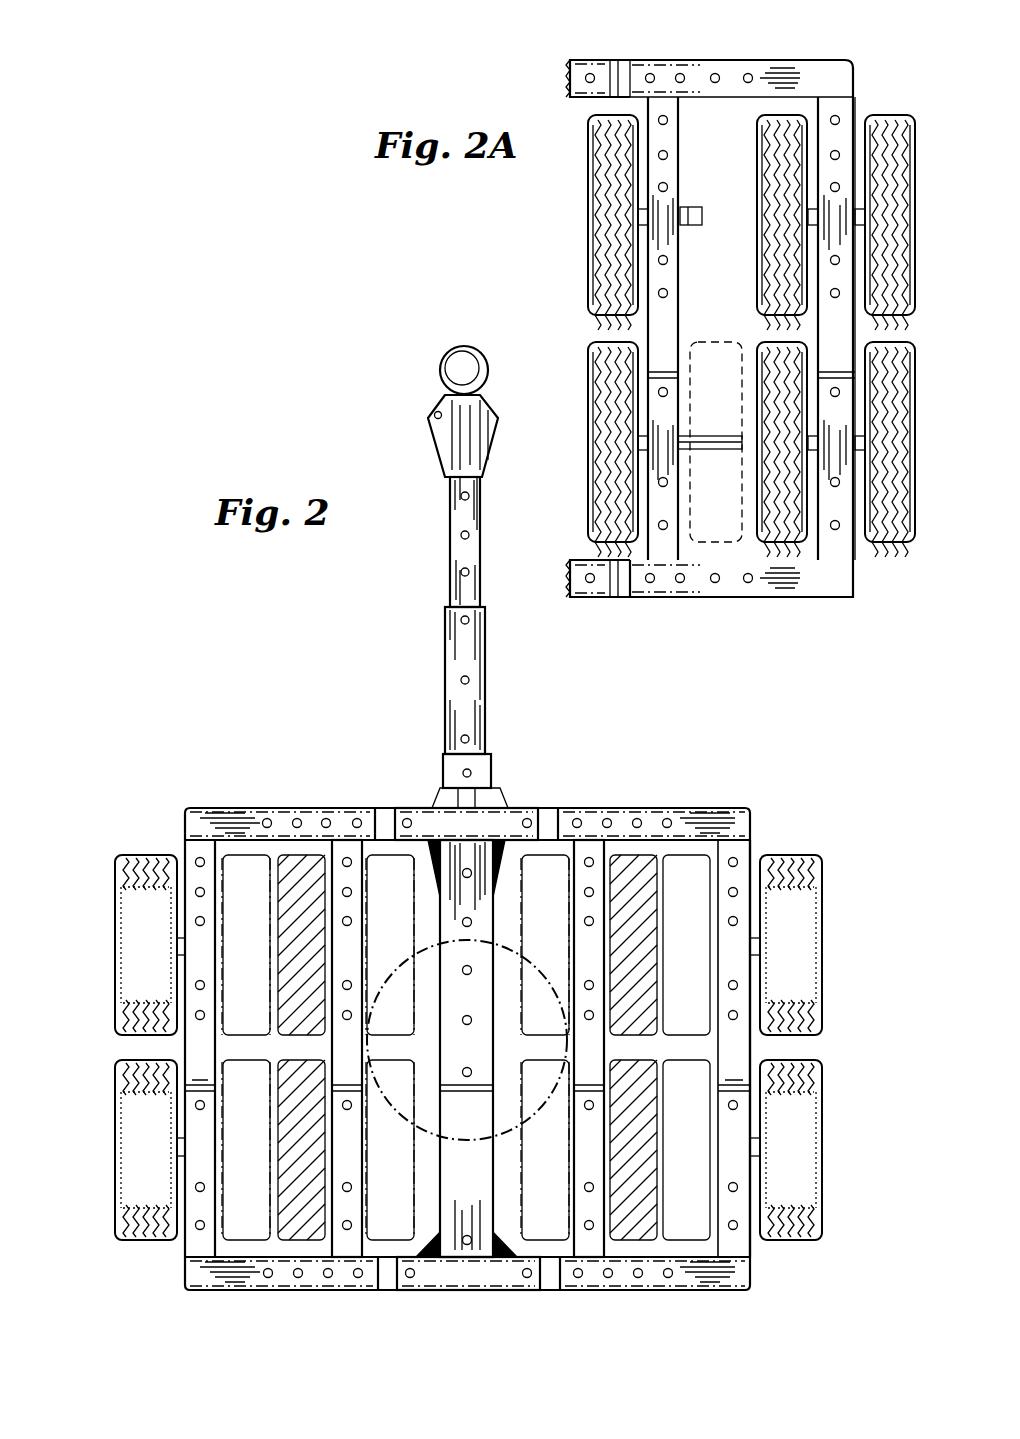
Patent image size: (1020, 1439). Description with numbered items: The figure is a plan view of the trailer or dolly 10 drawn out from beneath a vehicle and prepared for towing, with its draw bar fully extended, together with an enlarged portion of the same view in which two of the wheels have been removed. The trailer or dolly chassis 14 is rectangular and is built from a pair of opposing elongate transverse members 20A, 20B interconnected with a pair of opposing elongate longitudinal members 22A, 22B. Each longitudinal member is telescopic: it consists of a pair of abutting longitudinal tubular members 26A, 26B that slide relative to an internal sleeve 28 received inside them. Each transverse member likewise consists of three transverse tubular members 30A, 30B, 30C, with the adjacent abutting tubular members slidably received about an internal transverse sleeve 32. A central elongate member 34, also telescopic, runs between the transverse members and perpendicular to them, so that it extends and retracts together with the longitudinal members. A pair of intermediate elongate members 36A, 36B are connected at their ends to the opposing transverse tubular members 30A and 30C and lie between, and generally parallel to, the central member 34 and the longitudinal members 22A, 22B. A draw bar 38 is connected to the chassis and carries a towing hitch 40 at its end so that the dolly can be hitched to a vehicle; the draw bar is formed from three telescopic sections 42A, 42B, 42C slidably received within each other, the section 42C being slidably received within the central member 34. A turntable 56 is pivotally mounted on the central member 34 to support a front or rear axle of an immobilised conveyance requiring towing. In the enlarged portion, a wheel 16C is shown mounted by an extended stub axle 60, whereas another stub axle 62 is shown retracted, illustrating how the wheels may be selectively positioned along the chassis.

In FIG. 2, the trailer or dolly 10 is at (258, 668).
In FIG. 2A, the trailer or dolly chassis 14 is at (740, 50).
In FIG. 2, the trailer or dolly chassis 14 is at (735, 793).
In FIG. 2A, the wheel 16C is at (713, 537).
In FIG. 2, the transverse member 20A is at (330, 805).
In FIG. 2, the transverse member 20B is at (597, 1310).
In FIG. 2, the longitudinal member 22A is at (183, 1047).
In FIG. 2A, the longitudinal member 22B is at (862, 100).
In FIG. 2, the longitudinal member 22B is at (759, 1047).
In FIG. 2, the longitudinal tubular member 26A is at (197, 903).
In FIG. 2, the longitudinal tubular member 26B is at (197, 1172).
In FIG. 2, the internal sleeve 28 is at (197, 1103).
In FIG. 2, the transverse tubular member 30A is at (288, 822).
In FIG. 2, the transverse tubular member 30B is at (548, 815).
In FIG. 2, the transverse tubular member 30C is at (650, 832).
In FIG. 2, the internal transverse sleeve 32 is at (550, 817).
In FIG. 2, the central elongate member 34 is at (463, 1262).
In FIG. 2, the intermediate elongate member 36A is at (345, 1167).
In FIG. 2A, the intermediate elongate member 36B is at (675, 145).
In FIG. 2, the intermediate elongate member 36B is at (592, 1165).
In FIG. 2, the draw bar 38 is at (385, 594).
In FIG. 2, the towing hitch 40 is at (452, 362).
In FIG. 2, the telescopic section 42A is at (452, 518).
In FIG. 2, the telescopic section 42B is at (460, 666).
In FIG. 2, the telescopic section 42C is at (450, 775).
In FIG. 2, the turntable 56 is at (527, 960).
In FIG. 2A, the stub axle 60 is at (712, 437).
In FIG. 2A, the stub axle 62 is at (697, 210).